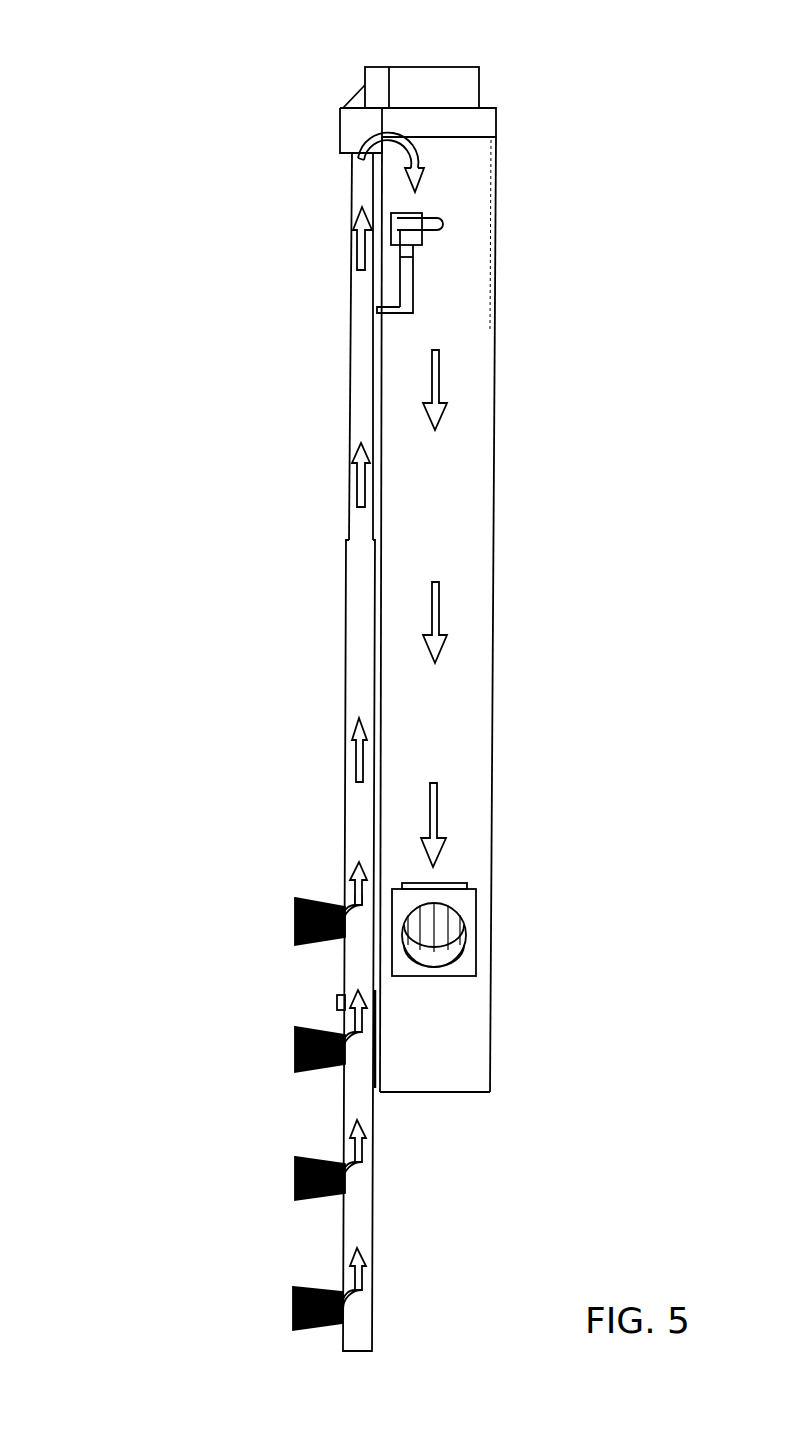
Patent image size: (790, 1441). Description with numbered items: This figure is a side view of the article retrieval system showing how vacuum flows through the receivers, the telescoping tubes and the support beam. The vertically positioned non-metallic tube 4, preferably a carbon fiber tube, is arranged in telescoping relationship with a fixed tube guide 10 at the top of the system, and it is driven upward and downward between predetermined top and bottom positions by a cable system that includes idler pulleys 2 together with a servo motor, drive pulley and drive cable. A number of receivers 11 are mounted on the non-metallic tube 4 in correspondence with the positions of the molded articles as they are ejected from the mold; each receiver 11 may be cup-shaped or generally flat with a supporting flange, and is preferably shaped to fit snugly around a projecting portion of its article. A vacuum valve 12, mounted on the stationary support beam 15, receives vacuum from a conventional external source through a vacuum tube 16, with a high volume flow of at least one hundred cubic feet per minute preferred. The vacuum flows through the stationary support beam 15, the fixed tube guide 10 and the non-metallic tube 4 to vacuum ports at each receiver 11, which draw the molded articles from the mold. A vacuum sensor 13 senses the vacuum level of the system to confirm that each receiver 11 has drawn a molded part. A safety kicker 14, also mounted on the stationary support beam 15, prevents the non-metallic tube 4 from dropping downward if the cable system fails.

The idler pulley 2 is at (334, 56).
The vacuum sensor 13 is at (507, 110).
The stationary support beam 15 is at (518, 612).
The safety kicker 14 is at (516, 263).
The fixed tube guide 10 is at (280, 346).
The non-metallic tube 4 is at (458, 945).
The receiver 11 is at (207, 1114).
The vacuum valve 12 is at (536, 875).
The vacuum tube 16 is at (530, 908).